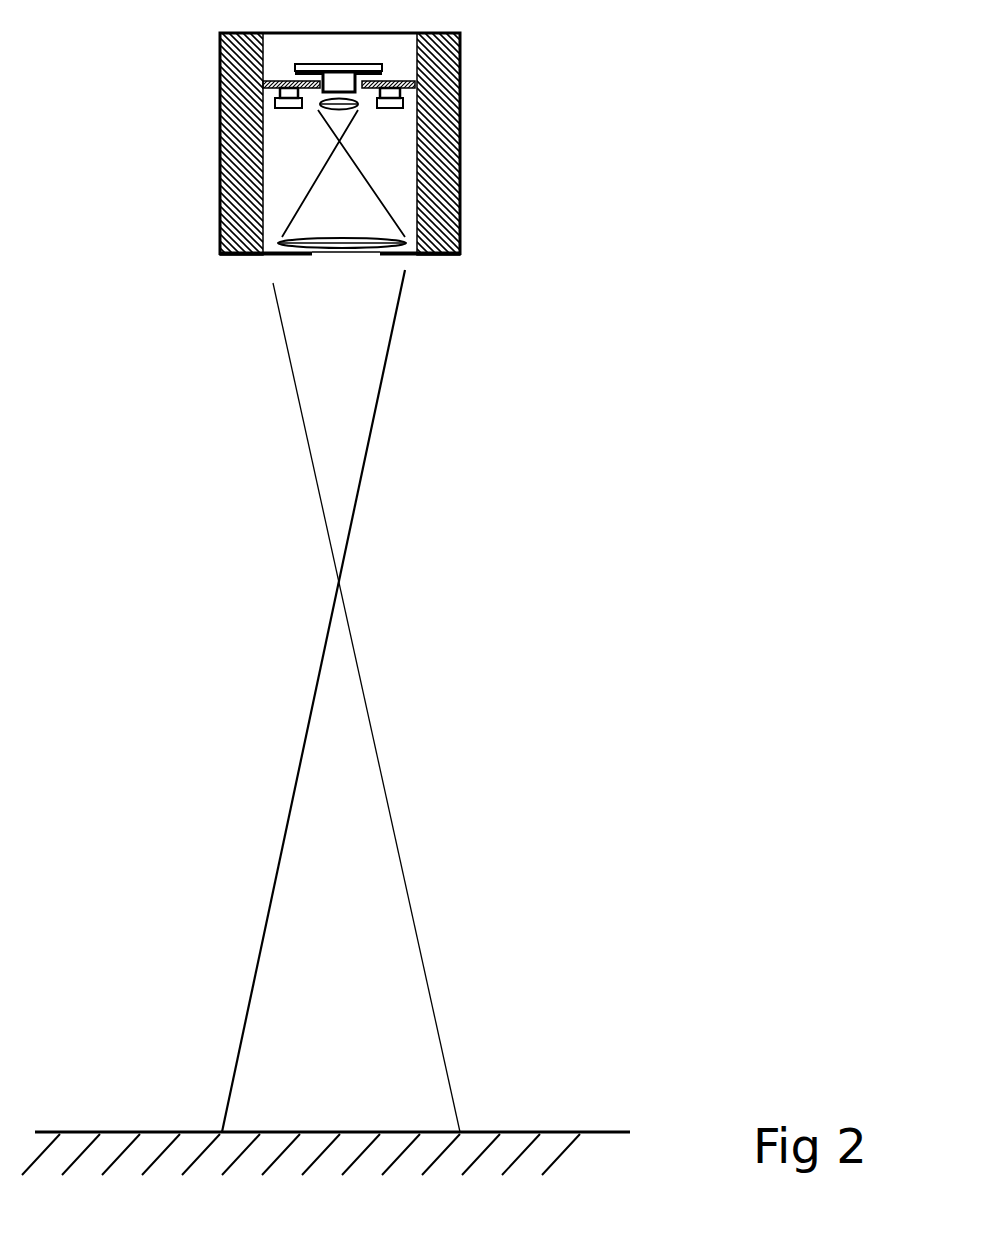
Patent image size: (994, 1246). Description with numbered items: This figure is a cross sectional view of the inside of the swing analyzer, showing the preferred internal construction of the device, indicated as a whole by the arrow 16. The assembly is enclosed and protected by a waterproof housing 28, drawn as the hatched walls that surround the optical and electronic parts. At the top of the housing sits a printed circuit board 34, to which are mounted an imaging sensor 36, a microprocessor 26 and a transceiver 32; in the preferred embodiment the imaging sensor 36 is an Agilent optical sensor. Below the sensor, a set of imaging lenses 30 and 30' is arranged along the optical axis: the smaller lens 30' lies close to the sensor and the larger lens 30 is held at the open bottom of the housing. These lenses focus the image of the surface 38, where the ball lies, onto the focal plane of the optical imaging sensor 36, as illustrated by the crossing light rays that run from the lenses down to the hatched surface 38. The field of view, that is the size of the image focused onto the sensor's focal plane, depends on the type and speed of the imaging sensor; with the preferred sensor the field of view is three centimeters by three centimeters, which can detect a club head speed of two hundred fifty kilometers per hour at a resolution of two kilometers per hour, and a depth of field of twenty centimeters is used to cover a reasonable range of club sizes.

The illumination device 16 is at (612, 52).
The microprocessor 26 is at (278, 101).
The waterproof housing 28 is at (220, 147).
The imaging lens 30 is at (478, 338).
The imaging lens 30' is at (200, 255).
The transceiver 32 is at (403, 104).
The printed circuit board 34 is at (403, 94).
The imaging sensor 36 is at (382, 68).
The surface 38 is at (500, 1132).